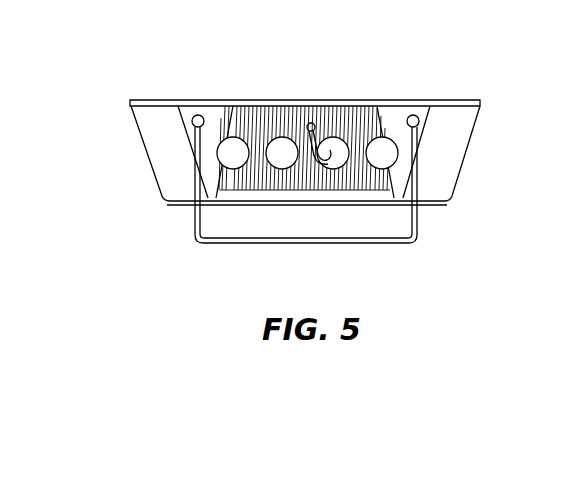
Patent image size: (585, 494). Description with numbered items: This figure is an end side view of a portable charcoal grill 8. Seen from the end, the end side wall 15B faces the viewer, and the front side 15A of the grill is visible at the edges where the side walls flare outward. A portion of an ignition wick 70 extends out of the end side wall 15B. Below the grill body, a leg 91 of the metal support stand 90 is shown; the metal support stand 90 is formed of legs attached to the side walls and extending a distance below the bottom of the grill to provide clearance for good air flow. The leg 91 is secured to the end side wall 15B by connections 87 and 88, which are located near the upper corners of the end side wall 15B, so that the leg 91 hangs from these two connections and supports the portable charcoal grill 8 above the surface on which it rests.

The portable charcoal grill 8 is at (308, 157).
The front side 15A is at (133, 125).
The end side wall 15B is at (392, 117).
The ignition wick 70 is at (311, 124).
The connection 87 is at (419, 118).
The connection 88 is at (195, 118).
The metal support stand 90 is at (250, 254).
The leg 91 is at (341, 244).